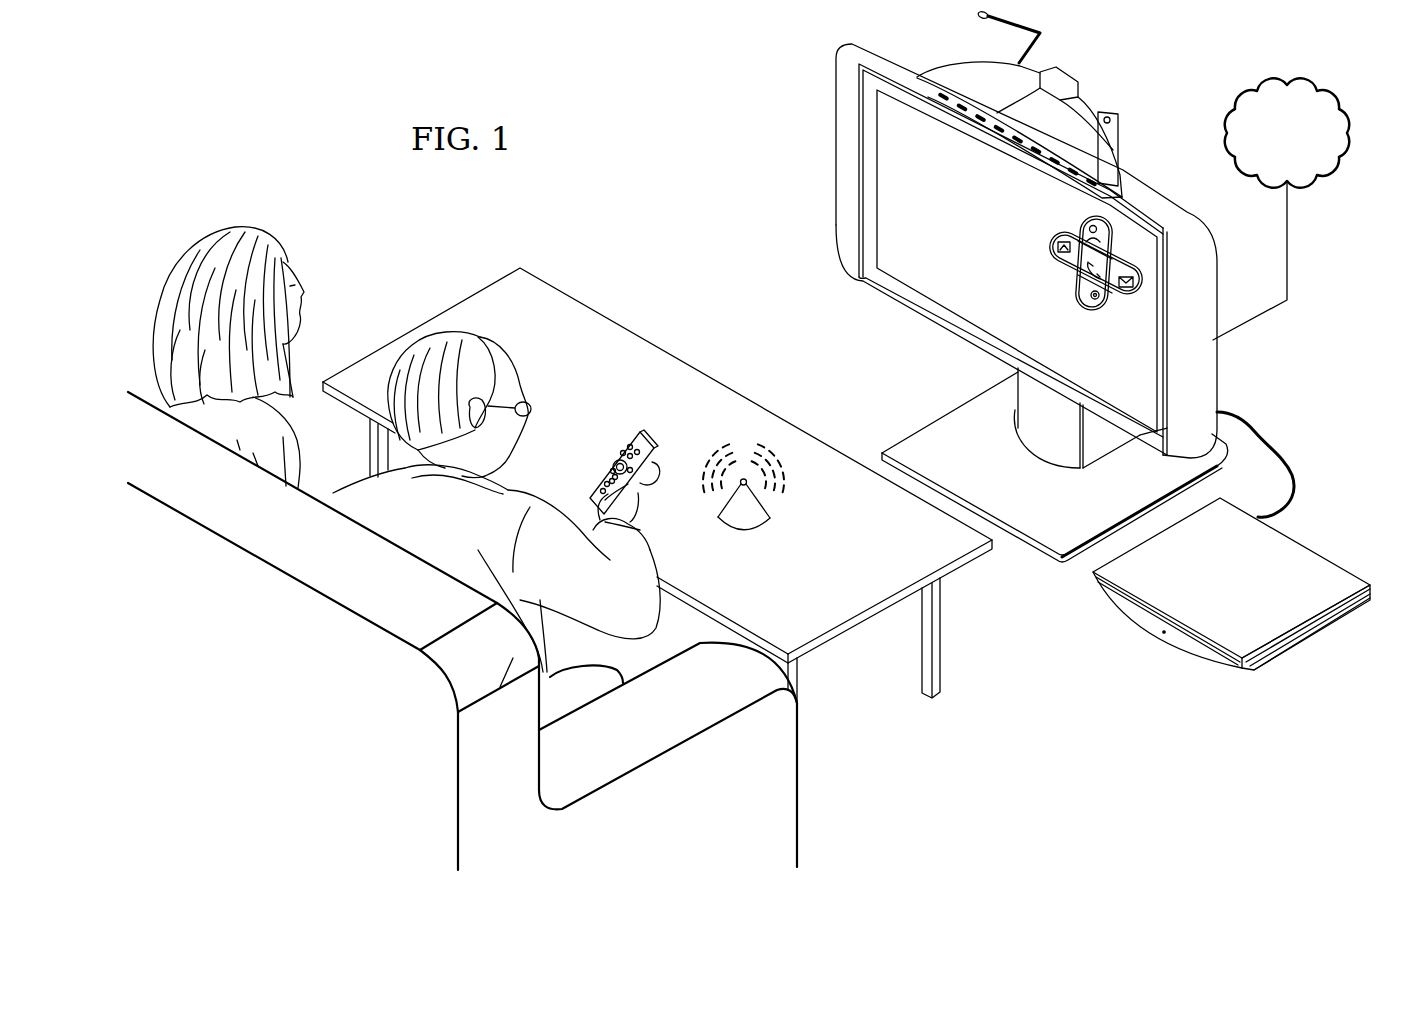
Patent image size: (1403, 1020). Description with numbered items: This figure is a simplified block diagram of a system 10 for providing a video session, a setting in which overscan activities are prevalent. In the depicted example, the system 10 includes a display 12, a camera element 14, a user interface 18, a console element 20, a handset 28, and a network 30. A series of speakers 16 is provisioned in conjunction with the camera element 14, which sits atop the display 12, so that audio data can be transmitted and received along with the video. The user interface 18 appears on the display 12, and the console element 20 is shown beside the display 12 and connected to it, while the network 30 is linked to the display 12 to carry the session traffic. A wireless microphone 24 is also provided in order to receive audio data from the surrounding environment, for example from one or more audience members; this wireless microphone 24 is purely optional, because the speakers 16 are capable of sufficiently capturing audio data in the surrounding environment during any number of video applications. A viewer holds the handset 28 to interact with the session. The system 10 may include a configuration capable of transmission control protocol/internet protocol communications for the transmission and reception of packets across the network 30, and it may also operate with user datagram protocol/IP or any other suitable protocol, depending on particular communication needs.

The system 10 is at (1044, 660).
The display 12 is at (836, 100).
The camera element 14 is at (1083, 110).
The speakers 16 is at (953, 100).
The user interface 18 is at (1077, 266).
The console element 20 is at (1305, 555).
The wireless microphone 24 is at (760, 503).
The handset 28 is at (619, 449).
The network 30 is at (1308, 83).